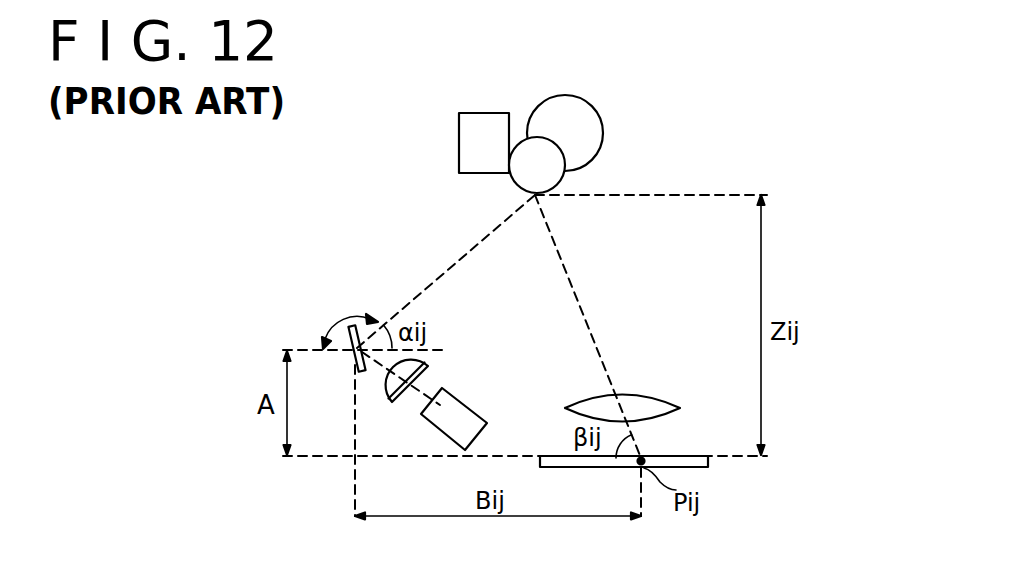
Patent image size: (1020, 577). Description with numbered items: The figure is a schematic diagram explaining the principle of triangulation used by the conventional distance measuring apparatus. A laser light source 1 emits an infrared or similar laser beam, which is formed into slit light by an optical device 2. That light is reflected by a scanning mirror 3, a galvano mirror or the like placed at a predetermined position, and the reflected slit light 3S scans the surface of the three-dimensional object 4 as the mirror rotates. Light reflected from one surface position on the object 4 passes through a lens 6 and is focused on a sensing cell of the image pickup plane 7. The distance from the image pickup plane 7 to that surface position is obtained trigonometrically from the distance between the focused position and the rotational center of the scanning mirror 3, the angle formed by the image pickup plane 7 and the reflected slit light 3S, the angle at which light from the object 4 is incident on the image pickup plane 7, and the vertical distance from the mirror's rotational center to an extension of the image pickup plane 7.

The laser light source 1 is at (476, 410).
The optical device 2 is at (420, 366).
The scanning mirror 3 is at (351, 326).
The slit light 3S is at (460, 258).
The three-dimensional object 4 is at (604, 138).
The imaging lens 6 is at (640, 396).
The image pickup plane 7 is at (708, 466).